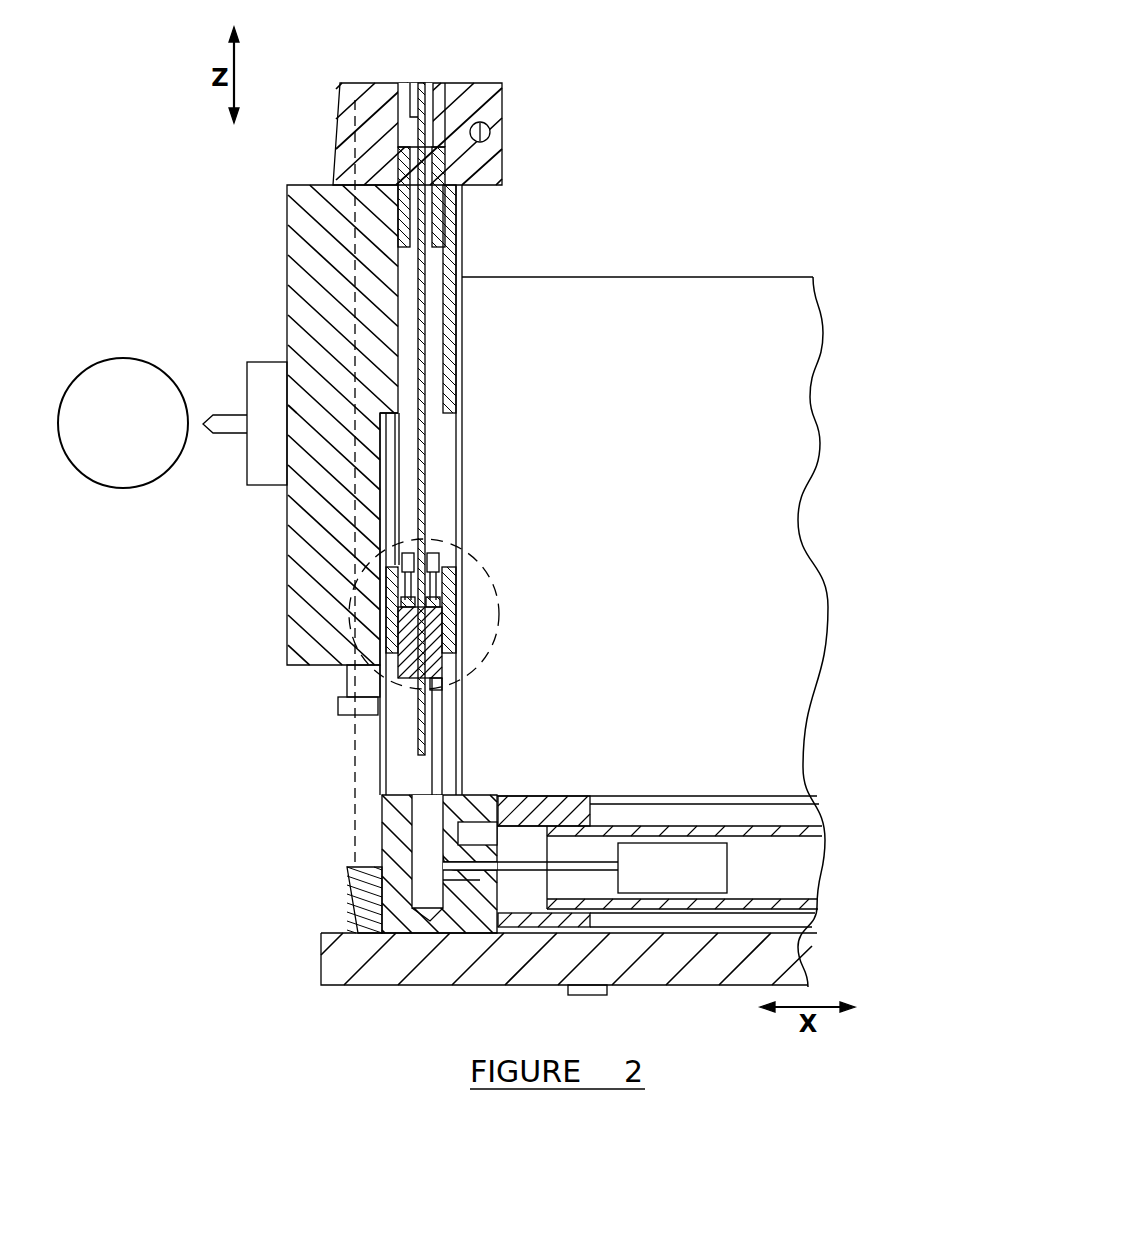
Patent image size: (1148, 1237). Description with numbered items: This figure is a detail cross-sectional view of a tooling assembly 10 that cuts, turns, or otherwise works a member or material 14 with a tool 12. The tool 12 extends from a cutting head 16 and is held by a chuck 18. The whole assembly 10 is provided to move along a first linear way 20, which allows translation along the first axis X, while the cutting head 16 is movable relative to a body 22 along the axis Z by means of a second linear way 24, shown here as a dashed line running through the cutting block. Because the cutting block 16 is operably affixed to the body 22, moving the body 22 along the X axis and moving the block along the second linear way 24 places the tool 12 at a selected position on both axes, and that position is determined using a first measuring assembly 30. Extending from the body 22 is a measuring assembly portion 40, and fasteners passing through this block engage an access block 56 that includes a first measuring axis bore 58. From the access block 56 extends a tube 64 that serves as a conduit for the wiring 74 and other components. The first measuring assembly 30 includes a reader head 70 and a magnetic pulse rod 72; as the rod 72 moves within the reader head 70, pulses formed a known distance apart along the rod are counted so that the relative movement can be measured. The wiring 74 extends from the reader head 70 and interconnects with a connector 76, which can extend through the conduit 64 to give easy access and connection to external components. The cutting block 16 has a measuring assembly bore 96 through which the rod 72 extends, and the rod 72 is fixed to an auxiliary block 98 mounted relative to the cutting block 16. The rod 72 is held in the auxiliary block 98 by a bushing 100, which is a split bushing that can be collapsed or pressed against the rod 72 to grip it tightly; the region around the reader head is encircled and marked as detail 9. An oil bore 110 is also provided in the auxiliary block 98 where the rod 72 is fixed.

The tooling assembly 10 is at (700, 47).
The tool 12 is at (237, 415).
The member or material 14 is at (130, 373).
The cutting head 16 is at (300, 185).
The chuck 18 is at (262, 362).
The first linear way 20 is at (343, 968).
The body 22 is at (773, 290).
The second linear way 24 is at (338, 138).
The first measuring assembly 30 is at (440, 450).
The measuring assembly portion 40 is at (383, 733).
The access block 56 is at (392, 820).
The first measuring axis bore 58 is at (420, 878).
The tube 64 is at (787, 820).
The reader head 70 is at (438, 664).
The magnetic pulse rod 72 is at (440, 481).
The wiring 74 is at (530, 866).
The connector 76 is at (705, 865).
The measuring assembly bore 96 is at (440, 312).
The auxiliary block 98 is at (466, 92).
The bushing 100 is at (441, 83).
The oil bore 110 is at (490, 132).
The detail circle 9 is at (493, 572).